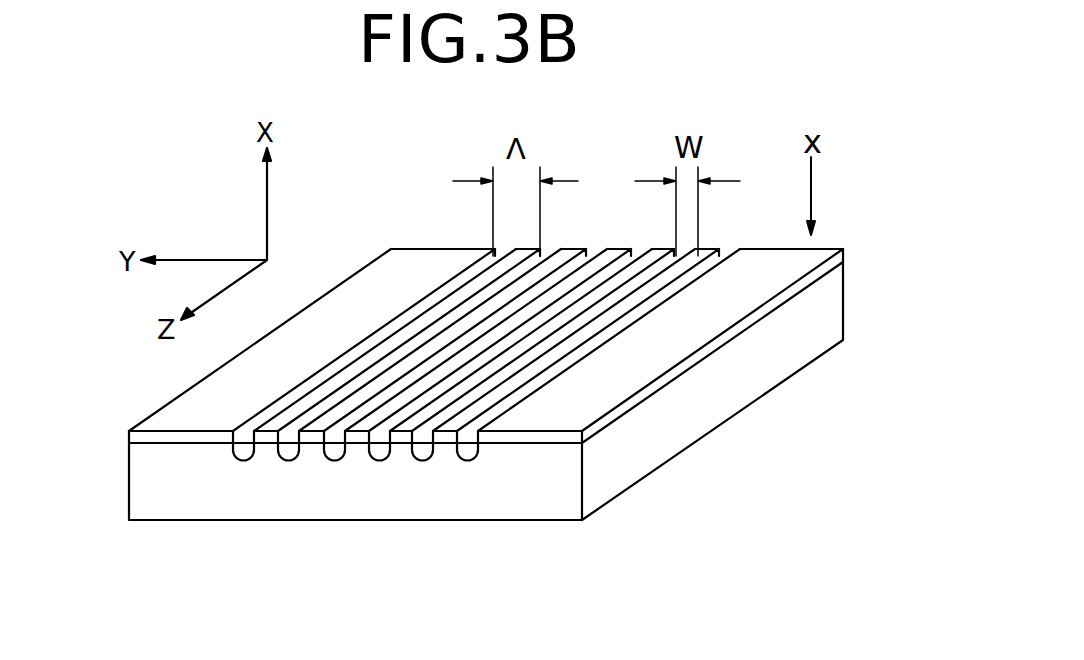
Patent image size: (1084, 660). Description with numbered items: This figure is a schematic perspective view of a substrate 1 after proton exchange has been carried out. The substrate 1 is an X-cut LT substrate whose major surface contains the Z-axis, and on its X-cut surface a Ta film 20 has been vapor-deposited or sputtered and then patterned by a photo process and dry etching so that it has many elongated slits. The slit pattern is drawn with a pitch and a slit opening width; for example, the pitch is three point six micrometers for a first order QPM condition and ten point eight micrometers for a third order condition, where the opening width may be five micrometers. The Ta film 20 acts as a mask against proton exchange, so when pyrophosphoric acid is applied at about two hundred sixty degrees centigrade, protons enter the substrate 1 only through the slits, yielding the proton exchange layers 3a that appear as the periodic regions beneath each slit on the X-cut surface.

The substrate 1 is at (842, 303).
The Ta film 20 is at (377, 282).
The proton exchange layers 3a is at (243, 455).